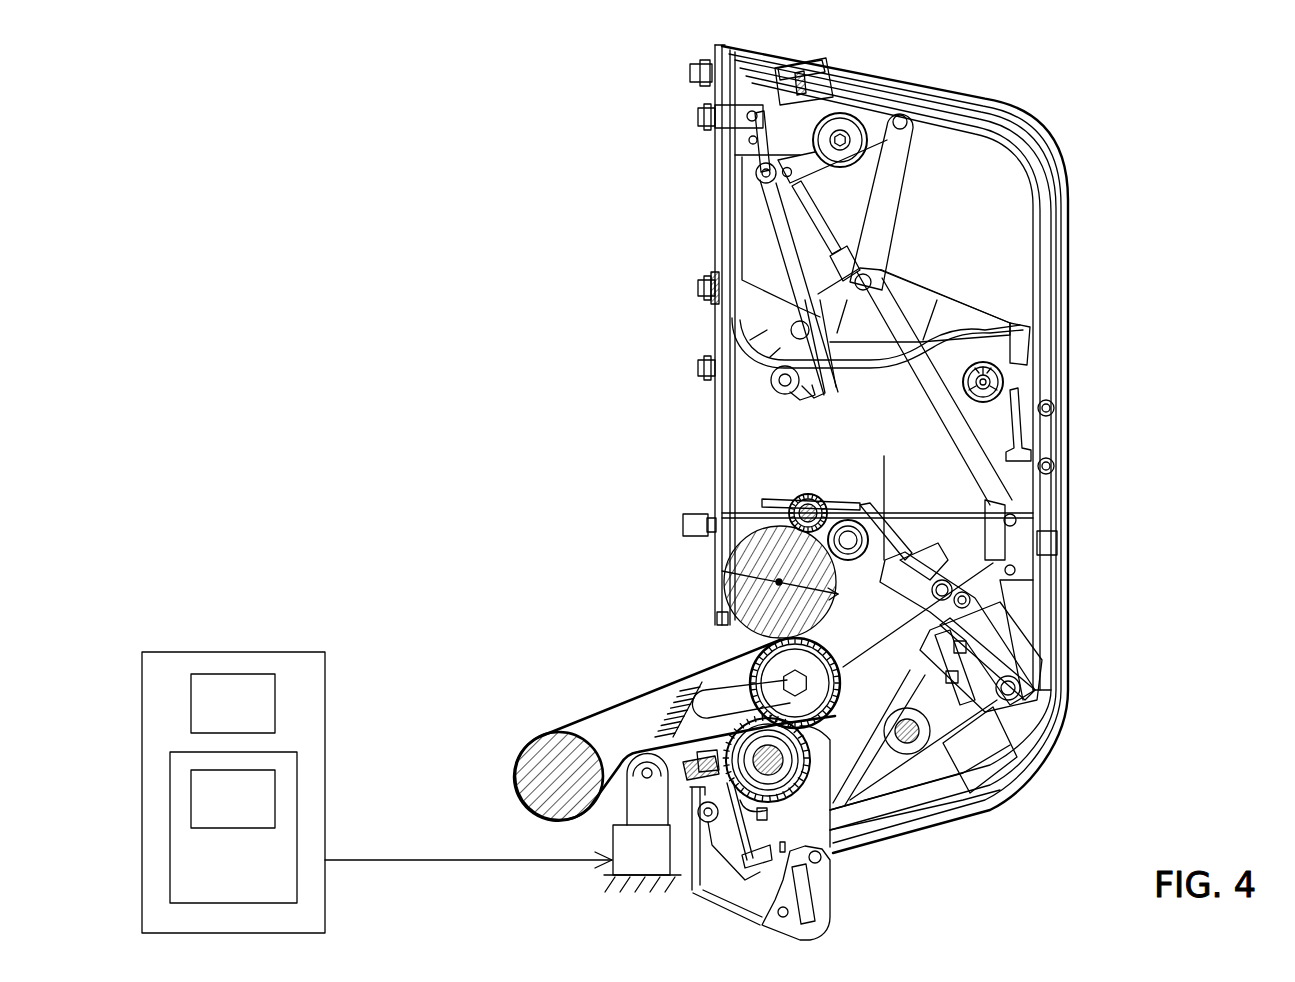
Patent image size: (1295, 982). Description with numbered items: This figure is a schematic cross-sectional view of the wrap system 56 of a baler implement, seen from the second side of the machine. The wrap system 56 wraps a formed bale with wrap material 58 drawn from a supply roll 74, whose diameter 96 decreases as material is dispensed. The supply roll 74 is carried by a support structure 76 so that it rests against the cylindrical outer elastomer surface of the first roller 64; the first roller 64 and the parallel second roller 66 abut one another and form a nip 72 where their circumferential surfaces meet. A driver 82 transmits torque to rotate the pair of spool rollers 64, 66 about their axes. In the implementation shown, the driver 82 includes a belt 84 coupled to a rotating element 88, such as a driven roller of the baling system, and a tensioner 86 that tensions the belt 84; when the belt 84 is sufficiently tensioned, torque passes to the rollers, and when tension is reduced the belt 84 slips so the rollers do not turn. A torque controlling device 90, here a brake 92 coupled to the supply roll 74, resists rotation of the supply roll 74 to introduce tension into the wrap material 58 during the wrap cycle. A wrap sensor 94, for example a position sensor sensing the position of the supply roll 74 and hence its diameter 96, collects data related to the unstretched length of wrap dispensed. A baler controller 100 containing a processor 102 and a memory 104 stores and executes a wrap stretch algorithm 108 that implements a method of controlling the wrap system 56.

The wrap system 56 is at (570, 457).
The wrap material 58 is at (752, 548).
The first roller 64 is at (820, 650).
The second roller 66 is at (790, 792).
The nip 72 is at (806, 733).
The supply roll 74 is at (738, 553).
The support structure 76 is at (907, 572).
The driver 82 is at (546, 706).
The belt 84 is at (592, 714).
The tensioner 86 is at (633, 845).
The rotating element 88 is at (535, 768).
The torque controlling device 90 is at (700, 677).
The brake 92 is at (715, 660).
The wrap sensor 94 is at (868, 449).
The diameter 96 is at (727, 575).
The baler controller 100 is at (195, 652).
The processor 102 is at (254, 718).
The memory 104 is at (254, 877).
The wrap stretch algorithm 108 is at (254, 808).